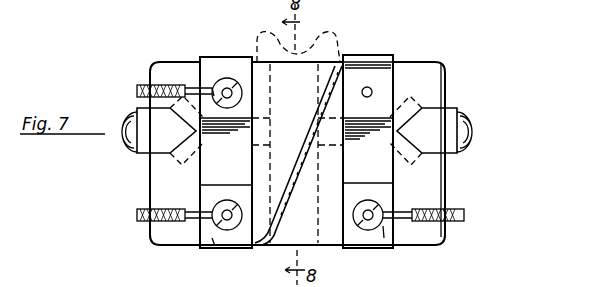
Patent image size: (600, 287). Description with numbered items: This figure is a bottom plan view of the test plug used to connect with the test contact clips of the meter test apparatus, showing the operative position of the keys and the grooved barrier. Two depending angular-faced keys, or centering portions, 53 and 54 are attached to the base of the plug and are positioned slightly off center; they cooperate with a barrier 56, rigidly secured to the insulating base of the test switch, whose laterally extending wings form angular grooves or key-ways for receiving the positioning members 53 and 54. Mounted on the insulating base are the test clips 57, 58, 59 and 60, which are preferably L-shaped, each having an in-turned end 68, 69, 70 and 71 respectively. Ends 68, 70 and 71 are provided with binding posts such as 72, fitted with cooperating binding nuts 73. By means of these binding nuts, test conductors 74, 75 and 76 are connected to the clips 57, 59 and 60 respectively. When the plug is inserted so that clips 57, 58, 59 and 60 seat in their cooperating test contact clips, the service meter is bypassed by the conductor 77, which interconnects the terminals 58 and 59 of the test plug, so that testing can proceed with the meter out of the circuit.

The angular-faced key 53 is at (146, 148).
The angular-faced key 54 is at (447, 150).
The barrier 56 is at (336, 40).
The test clip 57 is at (217, 57).
The test clip 58 is at (387, 57).
The test clip 59 is at (222, 243).
The test clip 60 is at (358, 245).
The in-turned end 68 is at (243, 98).
The in-turned end 69 is at (383, 78).
The in-turned end 70 is at (207, 224).
The in-turned end 71 is at (387, 238).
The binding post 72 is at (216, 88).
The binding nut 73 is at (230, 80).
The test conductor 74 is at (143, 85).
The test conductor 75 is at (138, 223).
The test conductor 76 is at (455, 212).
The conductor 77 is at (262, 246).